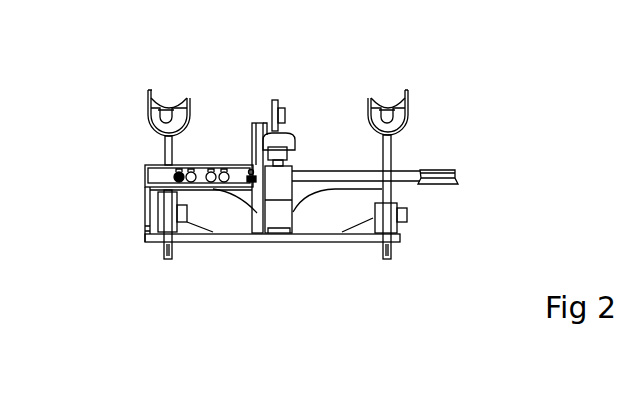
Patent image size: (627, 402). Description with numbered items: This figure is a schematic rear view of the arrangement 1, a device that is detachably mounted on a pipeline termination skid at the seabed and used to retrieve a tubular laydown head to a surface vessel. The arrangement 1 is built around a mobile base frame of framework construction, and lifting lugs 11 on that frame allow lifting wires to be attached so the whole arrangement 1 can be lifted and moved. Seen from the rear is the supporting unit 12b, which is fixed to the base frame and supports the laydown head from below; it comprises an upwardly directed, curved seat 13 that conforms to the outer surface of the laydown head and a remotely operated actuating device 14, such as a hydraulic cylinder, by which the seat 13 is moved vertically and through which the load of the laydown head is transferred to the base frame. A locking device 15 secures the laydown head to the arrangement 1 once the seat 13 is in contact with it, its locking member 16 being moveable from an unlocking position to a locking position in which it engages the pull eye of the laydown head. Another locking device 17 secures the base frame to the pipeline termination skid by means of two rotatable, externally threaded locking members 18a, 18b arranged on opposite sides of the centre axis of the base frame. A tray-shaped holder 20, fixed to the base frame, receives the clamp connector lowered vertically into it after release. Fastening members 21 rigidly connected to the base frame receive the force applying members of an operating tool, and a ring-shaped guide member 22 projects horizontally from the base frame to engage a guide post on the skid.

The arrangement 1 is at (331, 50).
The lifting lugs 11 is at (150, 93).
The supporting unit 12b is at (302, 168).
The seat 13 is at (285, 140).
The actuating device 14 is at (293, 237).
The locking device 15 is at (255, 110).
The locking member 16 is at (288, 110).
The locking device 17 is at (420, 213).
The locking member 18a is at (386, 260).
The locking member 18b is at (168, 260).
The holder 20 is at (322, 232).
The fastening member 21 is at (157, 113).
The guide member 22 is at (448, 184).